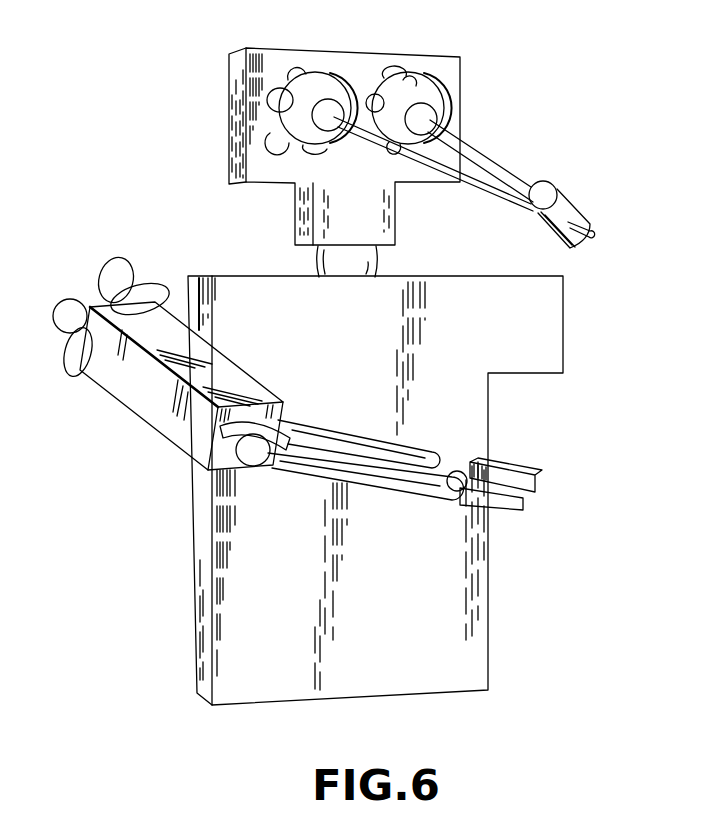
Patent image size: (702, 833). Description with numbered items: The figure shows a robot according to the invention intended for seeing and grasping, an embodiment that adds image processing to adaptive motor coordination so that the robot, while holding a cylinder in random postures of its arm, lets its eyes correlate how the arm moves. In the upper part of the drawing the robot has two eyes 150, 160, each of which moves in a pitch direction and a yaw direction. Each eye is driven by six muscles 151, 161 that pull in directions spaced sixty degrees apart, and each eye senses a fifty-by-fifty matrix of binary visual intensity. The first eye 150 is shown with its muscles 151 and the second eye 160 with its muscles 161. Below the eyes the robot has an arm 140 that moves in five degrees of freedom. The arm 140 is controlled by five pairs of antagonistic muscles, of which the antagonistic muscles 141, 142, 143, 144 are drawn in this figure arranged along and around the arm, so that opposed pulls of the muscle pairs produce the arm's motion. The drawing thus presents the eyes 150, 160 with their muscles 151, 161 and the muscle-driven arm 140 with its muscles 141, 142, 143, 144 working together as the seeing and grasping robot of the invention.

The arm 140 is at (109, 412).
The antagonistic muscle 141 is at (150, 412).
The antagonistic muscle 142 is at (370, 472).
The antagonistic muscle 143 is at (70, 300).
The antagonistic muscle 144 is at (217, 470).
The eye 150 is at (317, 76).
The muscles 151 is at (297, 67).
The eye 160 is at (428, 88).
The muscles 161 is at (397, 71).